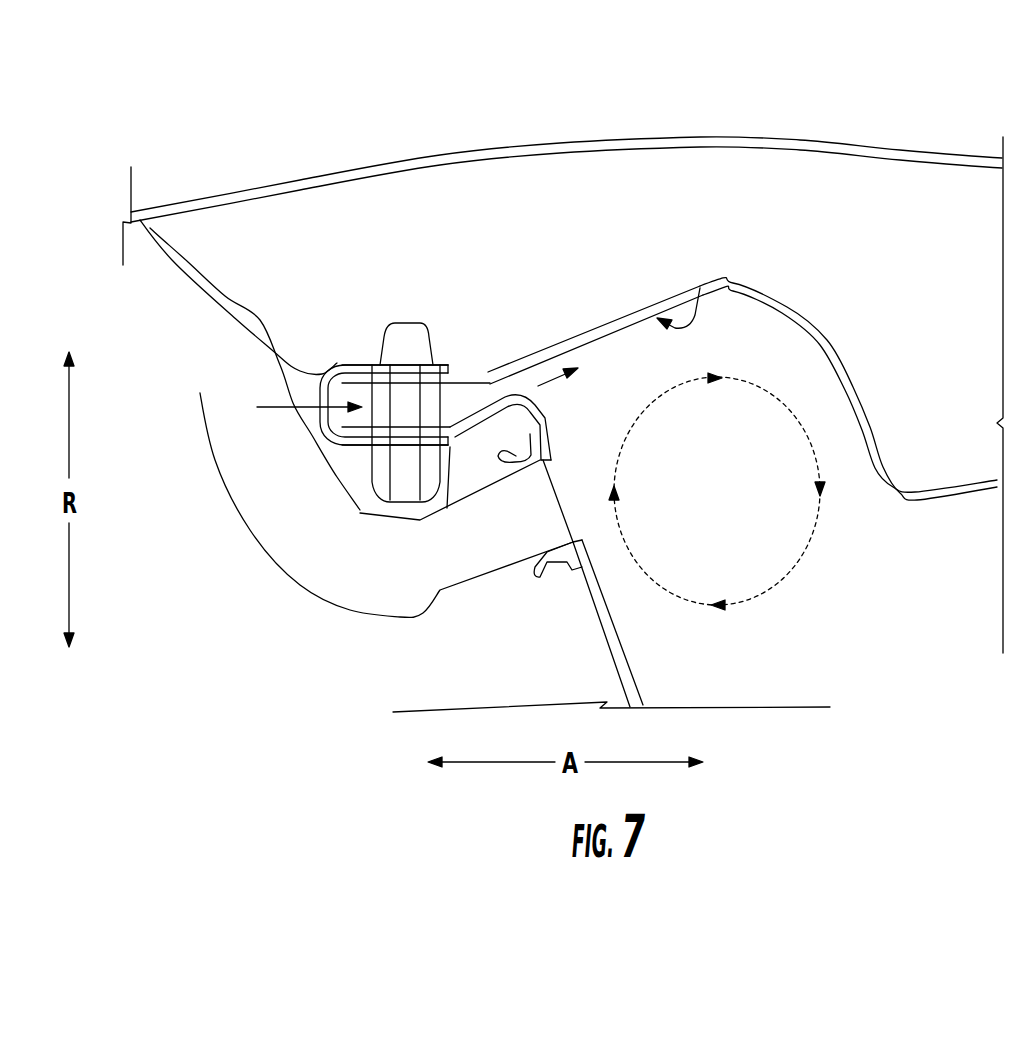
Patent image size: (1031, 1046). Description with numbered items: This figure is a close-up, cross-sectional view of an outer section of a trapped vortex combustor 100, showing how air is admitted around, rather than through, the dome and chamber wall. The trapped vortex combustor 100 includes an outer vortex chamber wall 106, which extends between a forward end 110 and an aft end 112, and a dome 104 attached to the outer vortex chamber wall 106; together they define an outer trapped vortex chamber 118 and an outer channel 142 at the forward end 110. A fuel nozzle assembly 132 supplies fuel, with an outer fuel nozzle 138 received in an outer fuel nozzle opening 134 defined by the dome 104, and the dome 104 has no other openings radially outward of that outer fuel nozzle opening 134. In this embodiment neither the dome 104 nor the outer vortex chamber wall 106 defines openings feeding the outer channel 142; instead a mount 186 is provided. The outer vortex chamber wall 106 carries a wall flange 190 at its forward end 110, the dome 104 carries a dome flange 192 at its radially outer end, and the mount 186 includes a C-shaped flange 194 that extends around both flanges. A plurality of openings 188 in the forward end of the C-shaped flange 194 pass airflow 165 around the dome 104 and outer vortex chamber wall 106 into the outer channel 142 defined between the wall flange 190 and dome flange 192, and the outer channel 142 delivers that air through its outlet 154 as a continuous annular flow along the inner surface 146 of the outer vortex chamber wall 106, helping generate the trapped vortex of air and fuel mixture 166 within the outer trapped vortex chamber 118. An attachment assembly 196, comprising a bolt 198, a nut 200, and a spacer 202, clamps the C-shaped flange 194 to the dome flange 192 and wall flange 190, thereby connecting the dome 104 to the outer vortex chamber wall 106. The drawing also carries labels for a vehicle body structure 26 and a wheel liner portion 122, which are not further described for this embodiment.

The vehicle body structure 26 is at (913, 112).
The trapped vortex combustor 100 is at (745, 167).
The dome 104 is at (610, 645).
The outer vortex chamber wall 106 is at (623, 322).
The forward end 110 is at (533, 355).
The aft end 112 is at (767, 260).
The outer trapped vortex chamber 118 is at (733, 504).
The wheel liner portion 122 is at (873, 413).
The fuel nozzle assembly 132 is at (300, 607).
The outer fuel nozzle opening 134 is at (588, 532).
The outer fuel nozzle 138 is at (513, 545).
The outer channel 142 is at (488, 385).
The inner surface 146 is at (703, 283).
The outlet 154 is at (533, 394).
The airflow 165 is at (270, 398).
The trapped vortex of air and fuel mixture 166 is at (793, 567).
The mount 186 is at (401, 407).
The openings 188 is at (382, 388).
The wall flange 190 is at (457, 370).
The dome flange 192 is at (443, 507).
The C-shaped flange 194 is at (337, 362).
The attachment assembly 196 is at (395, 407).
The bolt 198 is at (390, 328).
The nut 200 is at (386, 490).
The spacer 202 is at (382, 415).